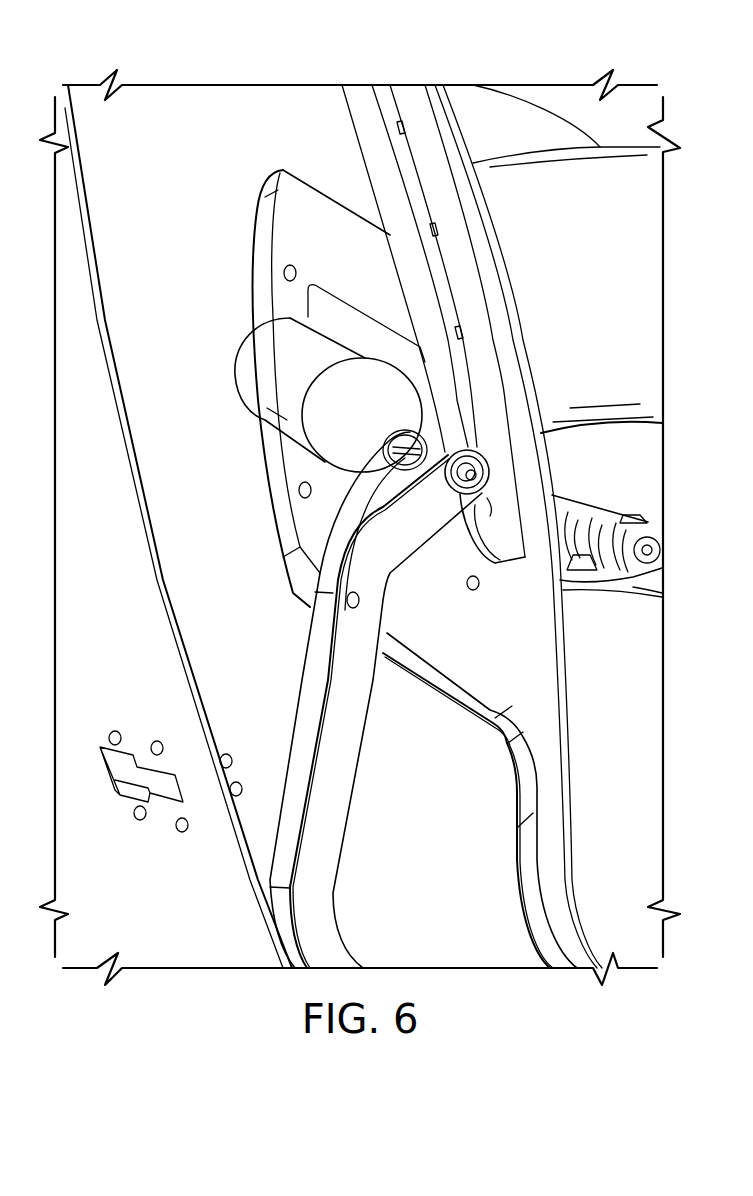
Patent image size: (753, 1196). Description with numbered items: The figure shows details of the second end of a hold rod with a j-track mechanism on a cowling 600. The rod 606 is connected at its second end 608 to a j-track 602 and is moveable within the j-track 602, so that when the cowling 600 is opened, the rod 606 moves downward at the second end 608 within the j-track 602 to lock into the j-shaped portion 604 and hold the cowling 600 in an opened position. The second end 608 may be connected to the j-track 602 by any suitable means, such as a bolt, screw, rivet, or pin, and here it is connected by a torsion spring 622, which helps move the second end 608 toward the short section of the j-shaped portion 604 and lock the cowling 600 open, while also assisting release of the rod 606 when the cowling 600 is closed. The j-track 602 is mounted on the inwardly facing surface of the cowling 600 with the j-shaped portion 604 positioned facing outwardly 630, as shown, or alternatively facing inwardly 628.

The cowling 600 is at (205, 98).
The outwardly facing direction 630 is at (458, 110).
The j-track 602 is at (463, 264).
The inwardly facing direction 628 is at (223, 218).
The torsion spring 622 is at (247, 357).
The rod 606 is at (358, 790).
The second end 608 is at (467, 470).
The j-shaped portion 604 is at (493, 527).